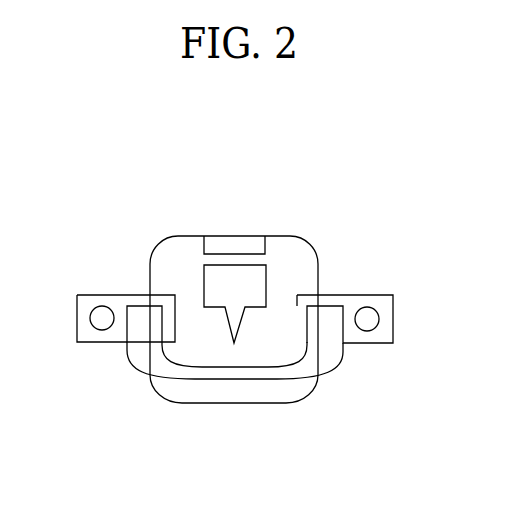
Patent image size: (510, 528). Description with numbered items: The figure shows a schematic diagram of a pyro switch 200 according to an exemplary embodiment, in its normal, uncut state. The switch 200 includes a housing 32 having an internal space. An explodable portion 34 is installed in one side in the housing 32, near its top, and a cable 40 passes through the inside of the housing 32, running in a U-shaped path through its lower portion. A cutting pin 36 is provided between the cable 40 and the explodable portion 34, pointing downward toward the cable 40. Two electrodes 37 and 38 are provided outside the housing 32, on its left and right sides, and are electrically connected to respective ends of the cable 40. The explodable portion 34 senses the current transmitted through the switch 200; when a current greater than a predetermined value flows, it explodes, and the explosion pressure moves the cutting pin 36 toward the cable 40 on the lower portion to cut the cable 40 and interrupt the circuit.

The switch 200 is at (110, 180).
The housing 32 is at (292, 236).
The explodable portion 34 is at (233, 245).
The cutting pin 36 is at (266, 274).
The electrode 37 is at (100, 343).
The electrode 38 is at (365, 344).
The cable 40 is at (235, 372).